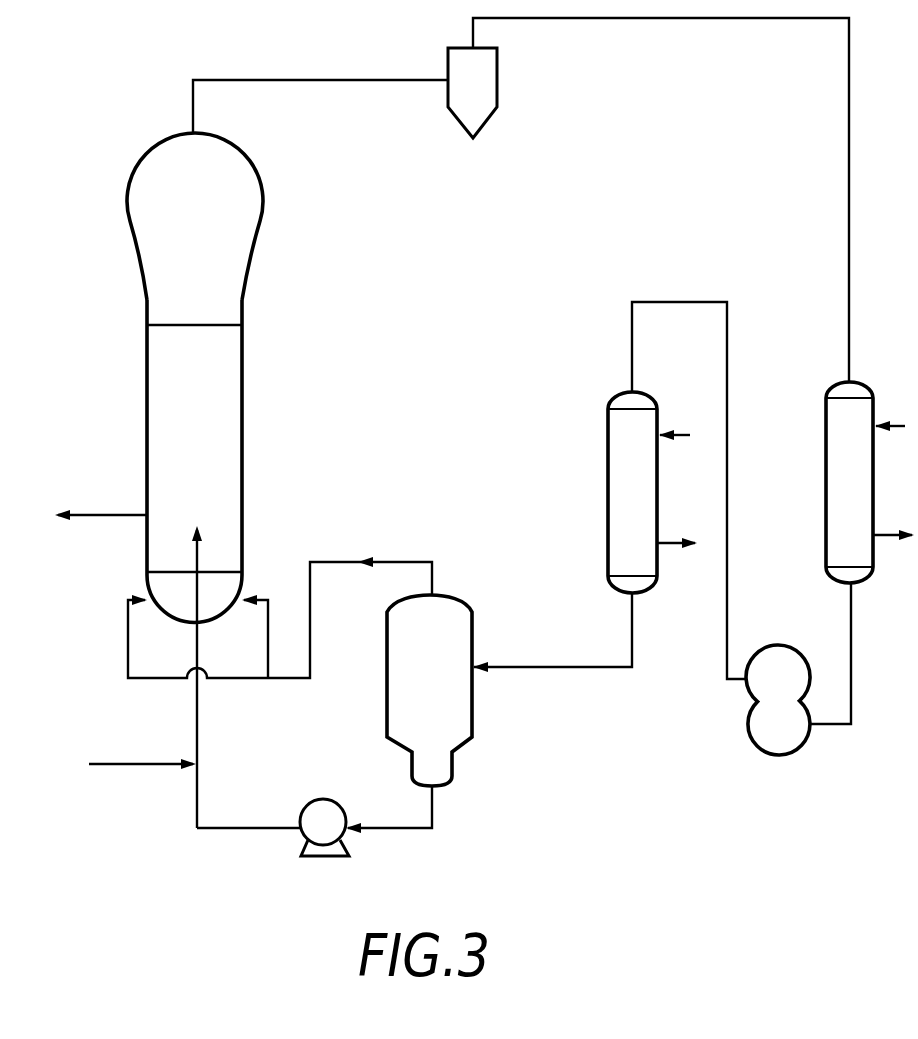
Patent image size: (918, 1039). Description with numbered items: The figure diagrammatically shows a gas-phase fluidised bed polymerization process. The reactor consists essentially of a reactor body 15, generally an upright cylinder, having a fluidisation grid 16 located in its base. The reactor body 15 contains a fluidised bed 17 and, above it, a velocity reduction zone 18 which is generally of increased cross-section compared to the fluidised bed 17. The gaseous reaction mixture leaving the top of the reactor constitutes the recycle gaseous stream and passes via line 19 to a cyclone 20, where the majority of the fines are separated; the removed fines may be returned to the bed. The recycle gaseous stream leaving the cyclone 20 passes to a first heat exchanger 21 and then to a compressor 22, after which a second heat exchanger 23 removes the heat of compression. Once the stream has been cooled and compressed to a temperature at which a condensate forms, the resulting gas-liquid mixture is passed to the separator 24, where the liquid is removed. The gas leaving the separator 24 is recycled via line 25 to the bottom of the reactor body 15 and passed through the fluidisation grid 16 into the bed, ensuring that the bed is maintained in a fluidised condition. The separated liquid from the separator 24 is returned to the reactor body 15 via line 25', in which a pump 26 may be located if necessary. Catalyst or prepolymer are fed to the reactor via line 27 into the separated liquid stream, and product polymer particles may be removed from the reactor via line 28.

The reactor body 15 is at (147, 333).
The fluidisation grid 16 is at (222, 572).
The fluidised bed 17 is at (172, 433).
The velocity reduction zone 18 is at (158, 213).
The line 19 is at (324, 79).
The cyclone 20 is at (478, 105).
The first heat exchanger 21 is at (846, 488).
The compressor 22 is at (773, 730).
The second heat exchanger 23 is at (628, 494).
The separator 24 is at (445, 702).
The line 25 is at (280, 656).
The line 25' is at (417, 844).
The pump 26 is at (334, 851).
The line 27 is at (128, 767).
The line 28 is at (100, 520).